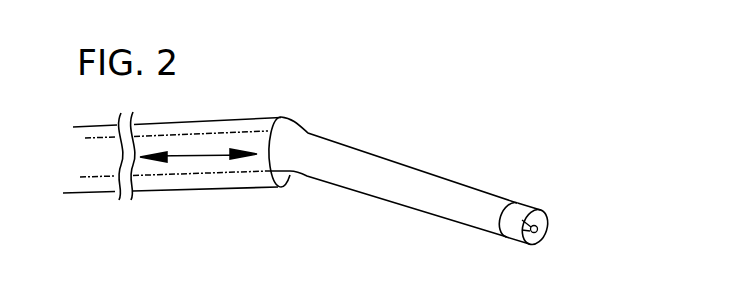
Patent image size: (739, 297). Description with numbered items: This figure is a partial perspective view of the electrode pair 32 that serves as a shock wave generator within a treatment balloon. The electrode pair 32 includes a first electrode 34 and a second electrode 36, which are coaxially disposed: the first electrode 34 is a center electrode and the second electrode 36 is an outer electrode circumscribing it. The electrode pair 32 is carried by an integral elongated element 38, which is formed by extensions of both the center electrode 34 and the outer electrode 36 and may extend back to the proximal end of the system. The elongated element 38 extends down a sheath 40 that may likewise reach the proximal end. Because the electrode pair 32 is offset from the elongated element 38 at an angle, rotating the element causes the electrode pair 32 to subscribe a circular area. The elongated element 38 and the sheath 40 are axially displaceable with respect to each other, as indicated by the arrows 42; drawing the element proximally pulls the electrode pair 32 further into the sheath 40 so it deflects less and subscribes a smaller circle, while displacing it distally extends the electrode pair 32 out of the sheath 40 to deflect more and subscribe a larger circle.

The electrode pair 32 is at (440, 148).
The first electrode 34 is at (538, 231).
The second electrode 36 is at (527, 204).
The elongated element 38 is at (185, 138).
The sheath 40 is at (275, 120).
The arrows 42 is at (198, 157).